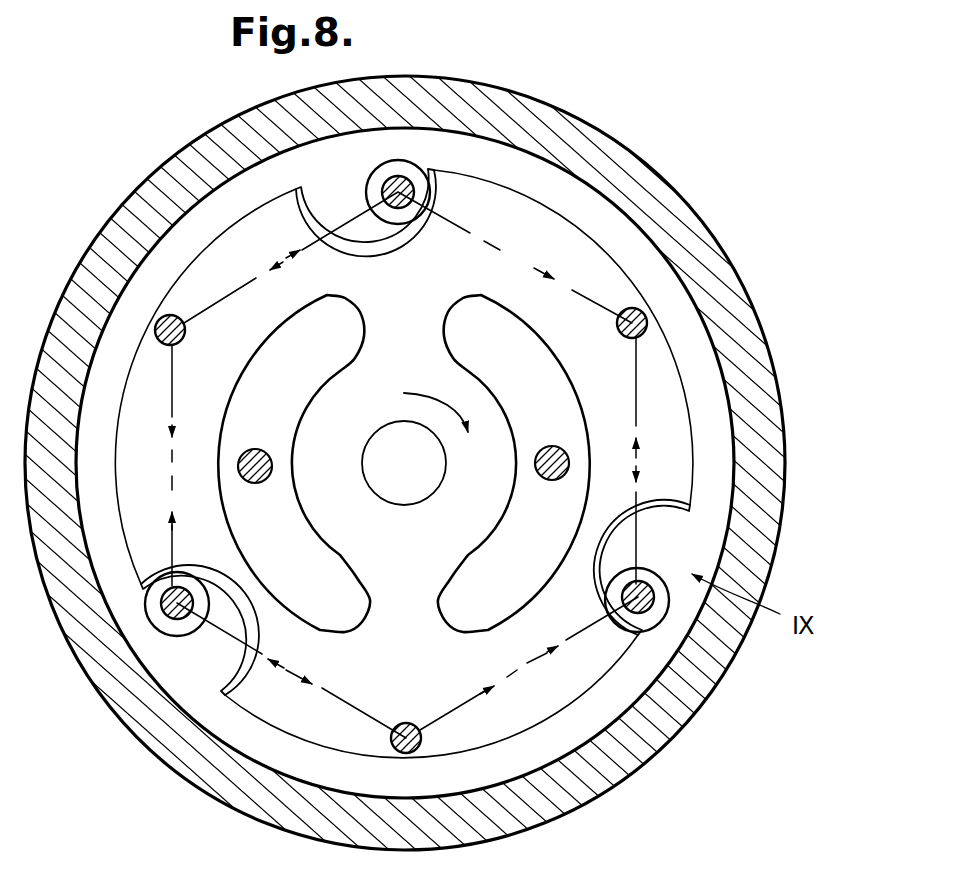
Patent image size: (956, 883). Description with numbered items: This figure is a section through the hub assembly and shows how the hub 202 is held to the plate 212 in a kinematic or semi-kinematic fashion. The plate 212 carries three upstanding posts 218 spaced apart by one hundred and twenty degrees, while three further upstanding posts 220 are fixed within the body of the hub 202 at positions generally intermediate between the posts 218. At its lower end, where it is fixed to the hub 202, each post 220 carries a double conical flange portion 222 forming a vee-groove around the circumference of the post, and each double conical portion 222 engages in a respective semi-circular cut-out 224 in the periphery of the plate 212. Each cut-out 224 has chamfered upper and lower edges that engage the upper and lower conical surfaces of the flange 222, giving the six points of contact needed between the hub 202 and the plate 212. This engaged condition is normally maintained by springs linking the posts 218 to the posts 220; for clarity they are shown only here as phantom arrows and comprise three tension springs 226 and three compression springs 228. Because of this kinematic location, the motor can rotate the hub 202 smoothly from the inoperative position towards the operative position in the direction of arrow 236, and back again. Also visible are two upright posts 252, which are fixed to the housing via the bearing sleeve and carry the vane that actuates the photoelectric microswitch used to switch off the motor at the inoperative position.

The hub 202 is at (664, 176).
The plate 212 is at (664, 376).
The upstanding posts 218 is at (186, 330).
The further upstanding posts 220 is at (412, 186).
The double conical flange portion 222 is at (388, 178).
The semi-circular cut-out 224 is at (312, 192).
The tension springs 226 is at (502, 256).
The compression springs 228 is at (250, 284).
The arrow 236 is at (410, 394).
The upright posts 252 is at (262, 450).